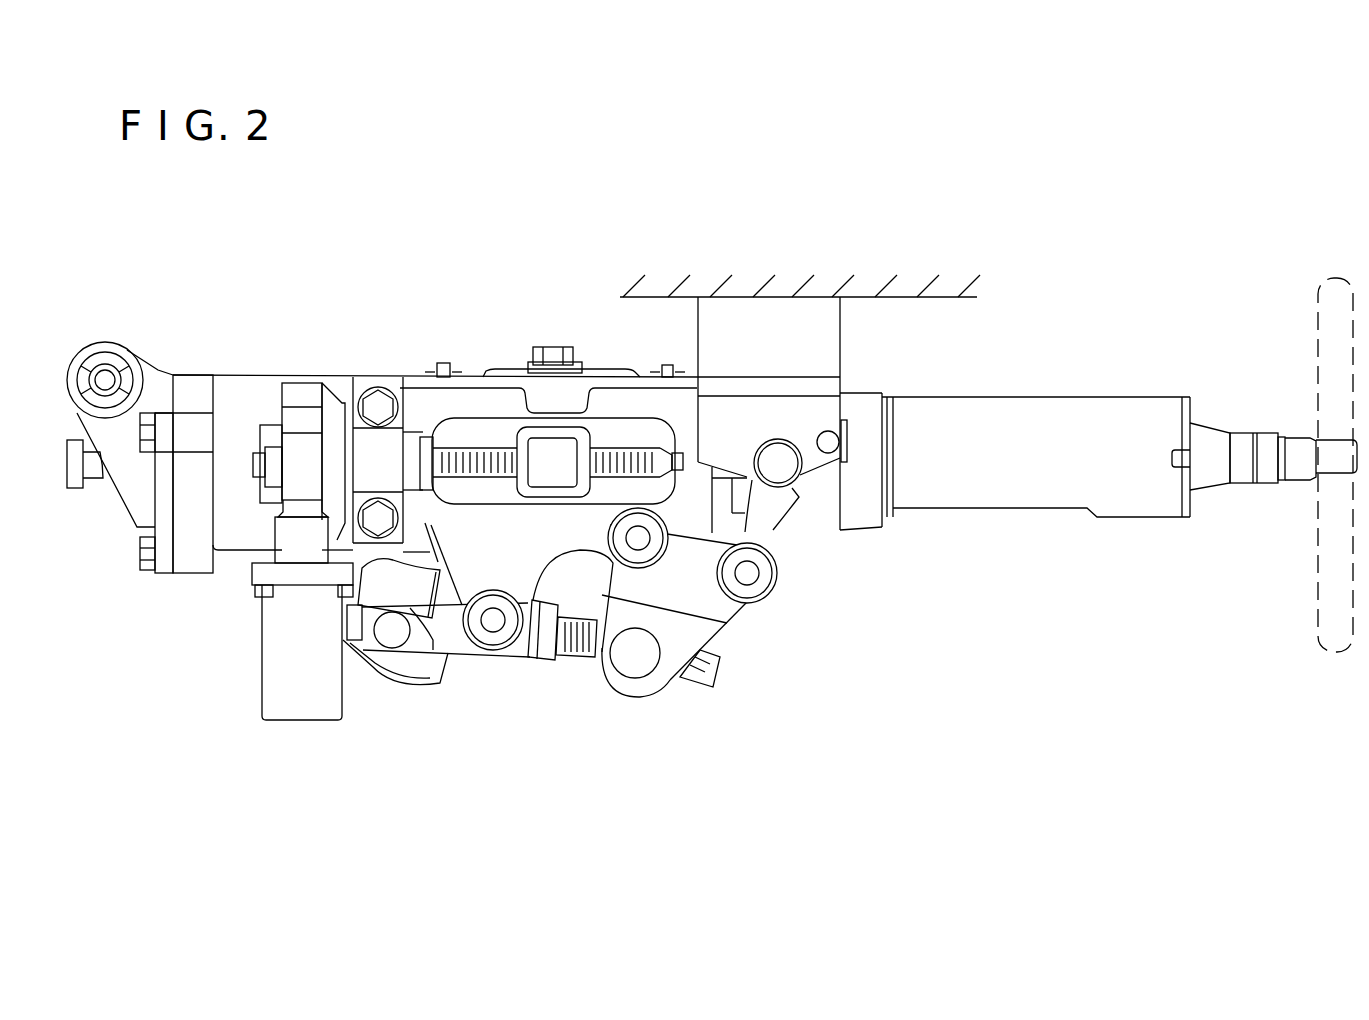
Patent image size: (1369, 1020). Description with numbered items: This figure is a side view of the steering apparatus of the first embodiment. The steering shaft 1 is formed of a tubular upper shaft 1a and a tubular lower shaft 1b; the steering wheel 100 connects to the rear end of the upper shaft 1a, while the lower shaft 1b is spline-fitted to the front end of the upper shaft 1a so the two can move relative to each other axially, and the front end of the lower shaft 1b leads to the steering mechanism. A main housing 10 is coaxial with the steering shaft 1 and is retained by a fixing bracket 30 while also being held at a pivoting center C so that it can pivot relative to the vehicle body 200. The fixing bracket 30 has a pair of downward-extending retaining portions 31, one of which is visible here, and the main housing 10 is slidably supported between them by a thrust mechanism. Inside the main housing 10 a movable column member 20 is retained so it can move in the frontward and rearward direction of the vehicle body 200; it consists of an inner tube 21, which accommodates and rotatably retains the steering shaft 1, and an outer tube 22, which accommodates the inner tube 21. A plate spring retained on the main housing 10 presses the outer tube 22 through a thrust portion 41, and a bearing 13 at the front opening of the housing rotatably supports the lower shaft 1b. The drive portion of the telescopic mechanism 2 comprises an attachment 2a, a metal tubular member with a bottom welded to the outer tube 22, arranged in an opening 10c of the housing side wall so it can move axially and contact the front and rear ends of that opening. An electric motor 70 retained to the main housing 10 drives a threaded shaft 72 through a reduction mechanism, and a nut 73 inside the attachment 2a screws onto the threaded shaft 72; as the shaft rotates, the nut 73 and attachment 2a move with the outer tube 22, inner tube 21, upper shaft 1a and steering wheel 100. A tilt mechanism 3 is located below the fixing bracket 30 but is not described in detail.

The steering shaft 1 is at (1211, 418).
The upper shaft 1a is at (1242, 472).
The lower shaft 1b is at (75, 492).
The telescopic mechanism 2 is at (470, 372).
The attachment 2a is at (552, 433).
The tilt mechanism 3 is at (788, 600).
The main housing 10 is at (255, 370).
The opening 10c is at (462, 497).
The bearing 13 is at (165, 568).
The movable column member 20 is at (995, 392).
The inner tube 21 is at (1015, 487).
The outer tube 22 is at (450, 433).
The fixing bracket 30 is at (778, 306).
The retaining portion 31 is at (815, 415).
The thrust portion 41 is at (598, 372).
The electric motor 70 is at (270, 683).
The threaded shaft 72 is at (627, 457).
The nut 73 is at (543, 458).
The steering wheel 100 is at (1327, 280).
The vehicle body 200 is at (955, 280).
The pivoting center C is at (105, 376).